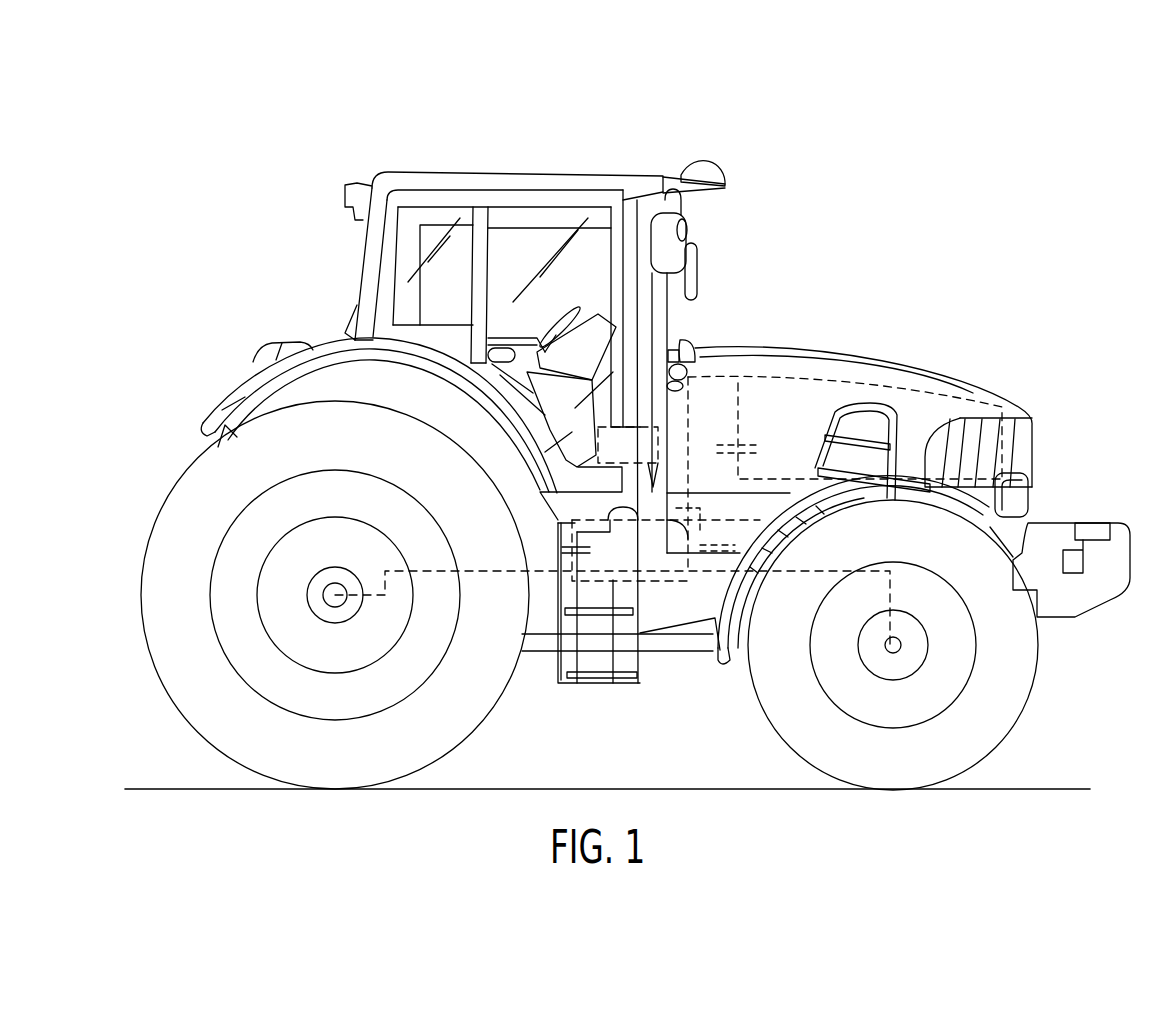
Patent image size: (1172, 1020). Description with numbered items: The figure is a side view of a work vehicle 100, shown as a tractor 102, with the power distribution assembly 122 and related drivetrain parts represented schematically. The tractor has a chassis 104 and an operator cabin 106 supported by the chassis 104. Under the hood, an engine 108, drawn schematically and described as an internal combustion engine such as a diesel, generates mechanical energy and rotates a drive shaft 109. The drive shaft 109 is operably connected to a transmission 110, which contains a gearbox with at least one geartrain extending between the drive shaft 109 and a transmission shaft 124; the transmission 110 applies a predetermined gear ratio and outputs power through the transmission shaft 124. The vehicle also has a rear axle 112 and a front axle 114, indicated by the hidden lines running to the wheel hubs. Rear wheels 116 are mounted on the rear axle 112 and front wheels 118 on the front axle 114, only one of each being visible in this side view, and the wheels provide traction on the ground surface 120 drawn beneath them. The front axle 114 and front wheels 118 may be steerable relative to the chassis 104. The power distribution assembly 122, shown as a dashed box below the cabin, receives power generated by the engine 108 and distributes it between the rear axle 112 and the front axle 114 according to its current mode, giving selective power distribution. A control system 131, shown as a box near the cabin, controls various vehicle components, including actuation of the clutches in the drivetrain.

The work vehicle 100 is at (327, 122).
The tractor 102 is at (473, 170).
The chassis 104 is at (697, 597).
The operator cabin 106 is at (543, 247).
The engine 108 is at (850, 357).
The drive shaft 109 is at (750, 450).
The transmission 110 is at (710, 380).
The rear axle 112 is at (332, 592).
The front axle 114 is at (893, 645).
The rear wheels 116 is at (160, 603).
The front wheels 118 is at (1025, 663).
The ground surface 120 is at (605, 788).
The power distribution assembly 122 is at (642, 562).
The transmission shaft 124 is at (688, 520).
The control system 131 is at (644, 456).